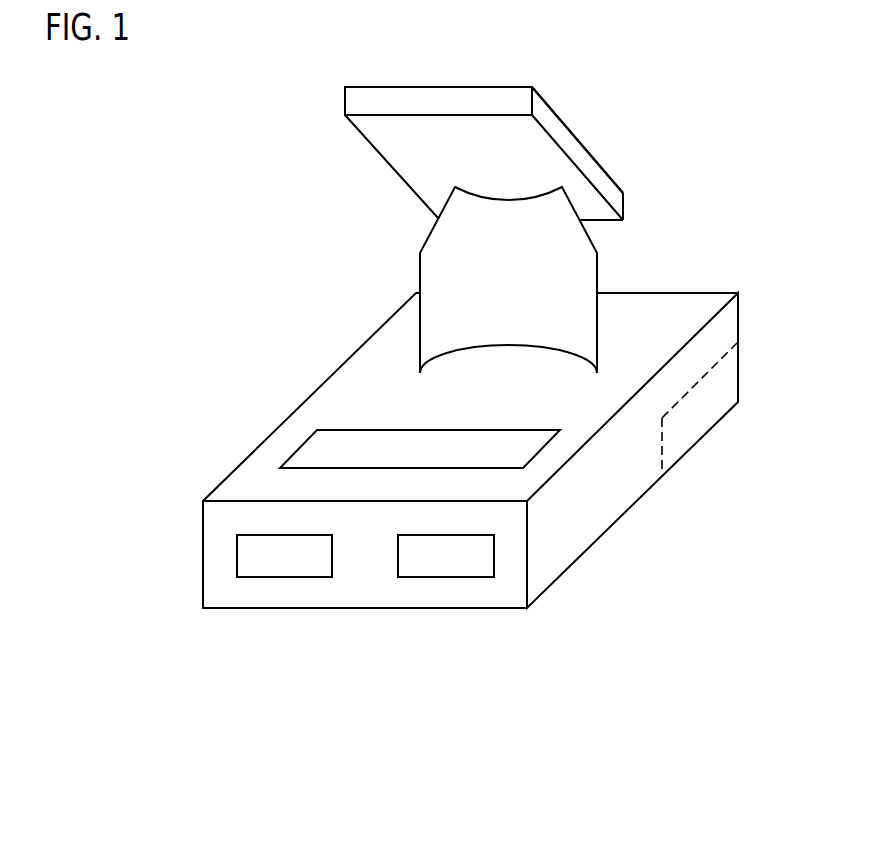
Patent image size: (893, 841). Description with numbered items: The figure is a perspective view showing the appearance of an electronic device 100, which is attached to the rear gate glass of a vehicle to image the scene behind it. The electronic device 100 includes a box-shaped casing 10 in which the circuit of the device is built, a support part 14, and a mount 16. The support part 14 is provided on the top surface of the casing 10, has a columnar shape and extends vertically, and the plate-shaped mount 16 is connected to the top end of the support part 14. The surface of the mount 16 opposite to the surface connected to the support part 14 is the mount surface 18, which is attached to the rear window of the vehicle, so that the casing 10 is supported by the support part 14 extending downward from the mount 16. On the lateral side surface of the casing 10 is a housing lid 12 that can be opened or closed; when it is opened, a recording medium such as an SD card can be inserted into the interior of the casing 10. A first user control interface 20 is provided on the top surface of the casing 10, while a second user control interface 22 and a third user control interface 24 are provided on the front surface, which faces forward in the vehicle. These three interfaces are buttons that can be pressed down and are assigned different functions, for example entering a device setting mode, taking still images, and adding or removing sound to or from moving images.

The casing 10 is at (707, 303).
The housing lid 12 is at (702, 410).
The support part 14 is at (583, 280).
The mount 16 is at (595, 173).
The mount surface 18 is at (576, 129).
The first user control interface 20 is at (300, 445).
The second user control interface 22 is at (280, 563).
The third user control interface 24 is at (438, 563).
The electronic device 100 is at (478, 793).